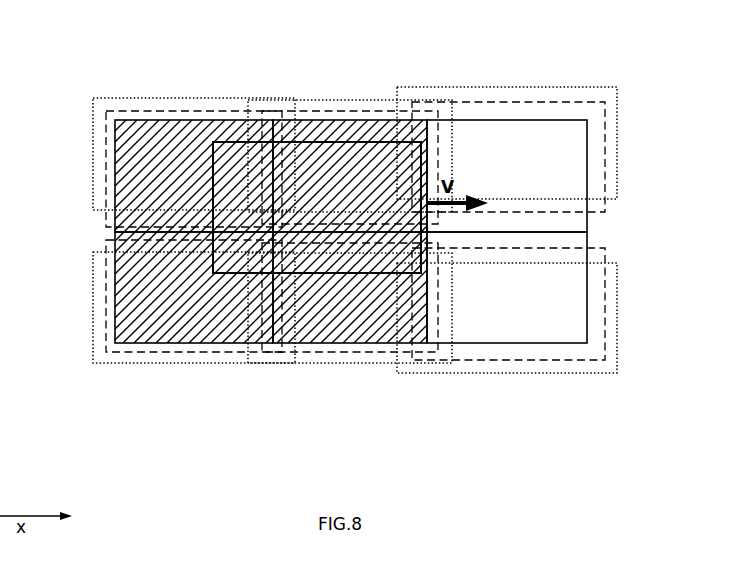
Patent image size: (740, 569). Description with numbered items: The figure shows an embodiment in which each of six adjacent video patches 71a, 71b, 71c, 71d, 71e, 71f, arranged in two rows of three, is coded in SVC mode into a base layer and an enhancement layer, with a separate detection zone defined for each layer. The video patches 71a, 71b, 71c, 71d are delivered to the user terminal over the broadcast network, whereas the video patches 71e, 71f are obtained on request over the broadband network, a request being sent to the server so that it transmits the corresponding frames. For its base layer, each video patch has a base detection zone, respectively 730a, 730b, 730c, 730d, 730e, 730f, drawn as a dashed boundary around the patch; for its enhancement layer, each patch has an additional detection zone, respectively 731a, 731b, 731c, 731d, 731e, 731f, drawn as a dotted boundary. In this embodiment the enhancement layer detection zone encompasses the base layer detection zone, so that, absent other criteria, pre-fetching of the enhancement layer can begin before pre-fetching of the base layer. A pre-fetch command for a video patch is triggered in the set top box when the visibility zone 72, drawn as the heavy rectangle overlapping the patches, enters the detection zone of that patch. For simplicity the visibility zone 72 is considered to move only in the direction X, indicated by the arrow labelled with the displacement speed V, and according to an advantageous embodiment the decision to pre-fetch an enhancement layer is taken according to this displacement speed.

The video patch 71a is at (150, 177).
The video patch 71b is at (148, 288).
The video patch 71c is at (426, 126).
The video patch 71d is at (368, 318).
The video patch 71e is at (563, 170).
The video patch 71f is at (563, 300).
The visibility zone 72 is at (384, 142).
The base layer detection zone 730a is at (153, 110).
The base layer detection zone 730b is at (157, 352).
The base layer detection zone 730c is at (327, 110).
The base layer detection zone 730d is at (313, 352).
The base layer detection zone 730e is at (575, 102).
The base layer detection zone 730f is at (568, 360).
The enhancement layer detection zone 731a is at (220, 98).
The enhancement layer detection zone 731b is at (222, 363).
The enhancement layer detection zone 731c is at (373, 100).
The enhancement layer detection zone 731d is at (368, 363).
The enhancement layer detection zone 731e is at (510, 100).
The enhancement layer detection zone 731f is at (497, 373).